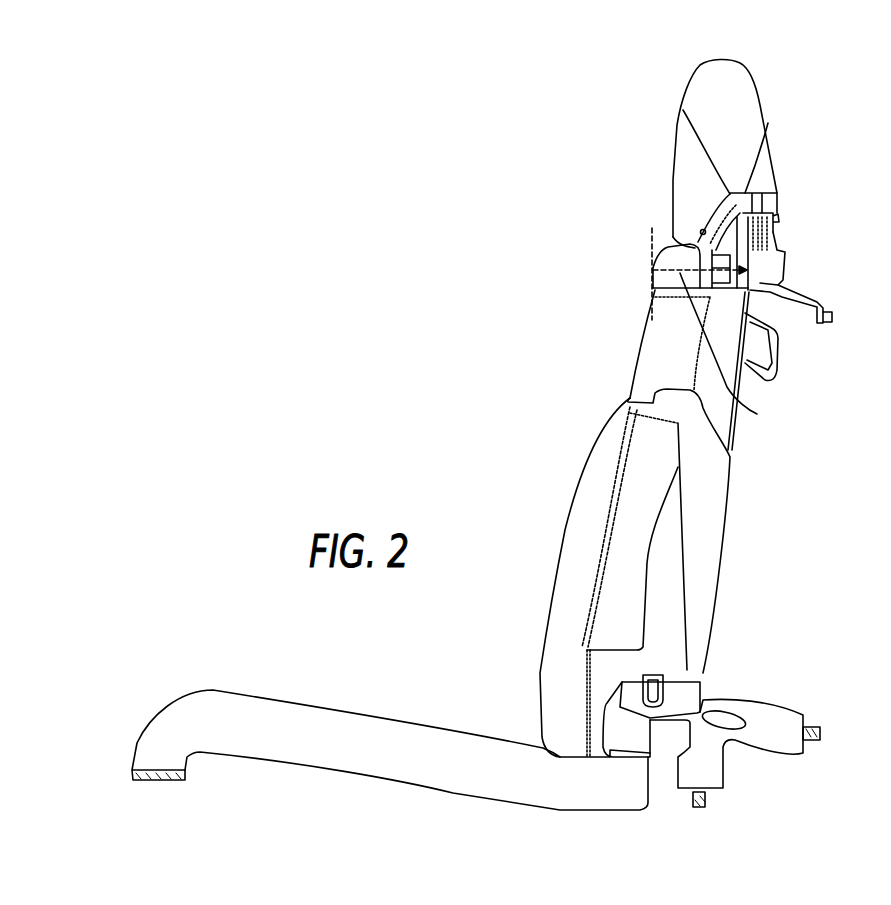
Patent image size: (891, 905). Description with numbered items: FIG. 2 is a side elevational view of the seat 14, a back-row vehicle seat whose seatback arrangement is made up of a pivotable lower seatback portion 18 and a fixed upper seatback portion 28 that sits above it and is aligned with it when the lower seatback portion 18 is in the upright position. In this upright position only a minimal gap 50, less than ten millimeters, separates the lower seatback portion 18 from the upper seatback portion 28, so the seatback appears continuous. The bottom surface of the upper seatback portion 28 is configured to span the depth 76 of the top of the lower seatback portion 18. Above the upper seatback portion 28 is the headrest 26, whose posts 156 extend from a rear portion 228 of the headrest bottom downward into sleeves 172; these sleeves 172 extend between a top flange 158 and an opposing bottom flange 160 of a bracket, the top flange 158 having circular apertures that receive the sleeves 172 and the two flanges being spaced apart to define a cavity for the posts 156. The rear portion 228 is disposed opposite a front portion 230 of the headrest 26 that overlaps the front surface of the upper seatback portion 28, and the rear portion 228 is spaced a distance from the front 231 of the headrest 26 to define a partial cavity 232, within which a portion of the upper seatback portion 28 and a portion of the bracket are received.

The seat 14 is at (374, 196).
The lower seatback portion 18 is at (573, 490).
The headrest 26 is at (748, 70).
The upper seatback portion 28 is at (663, 268).
The gap 50 is at (652, 288).
The depth 76 is at (745, 410).
The posts 156 is at (777, 211).
The top flange 158 is at (778, 219).
The bottom flange 160 is at (784, 278).
The sleeves 172 is at (774, 232).
The rear portion 228 is at (770, 122).
The front portion 230 is at (703, 232).
The front 231 is at (675, 243).
The partial cavity 232 is at (683, 110).